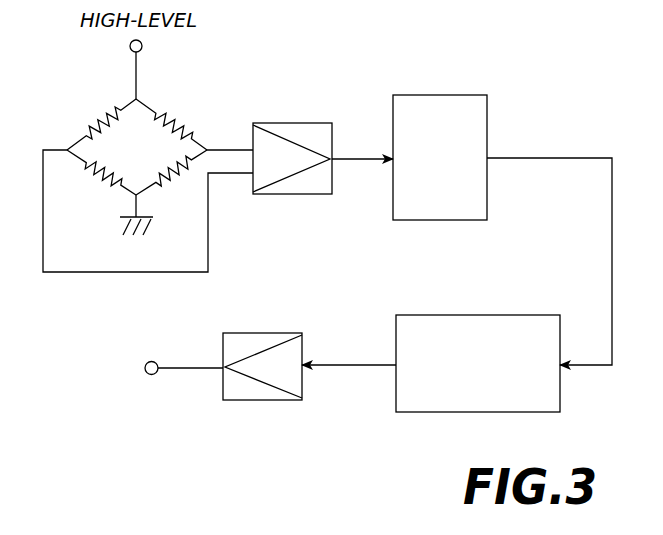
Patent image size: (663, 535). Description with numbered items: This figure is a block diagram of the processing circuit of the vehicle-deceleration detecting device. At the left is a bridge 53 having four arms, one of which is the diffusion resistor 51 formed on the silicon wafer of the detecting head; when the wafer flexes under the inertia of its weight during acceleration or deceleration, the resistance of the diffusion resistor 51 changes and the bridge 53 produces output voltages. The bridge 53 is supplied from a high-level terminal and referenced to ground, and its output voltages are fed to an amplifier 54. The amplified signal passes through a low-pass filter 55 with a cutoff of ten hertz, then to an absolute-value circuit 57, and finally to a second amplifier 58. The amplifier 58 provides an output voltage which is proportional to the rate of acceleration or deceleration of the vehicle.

The diffusion resistor 51 is at (163, 121).
The bridge 53 is at (115, 127).
The amplifier 54 is at (297, 132).
The low-pass filter 55 is at (432, 102).
The absolute-value circuit 57 is at (495, 323).
The amplifier 58 is at (252, 340).